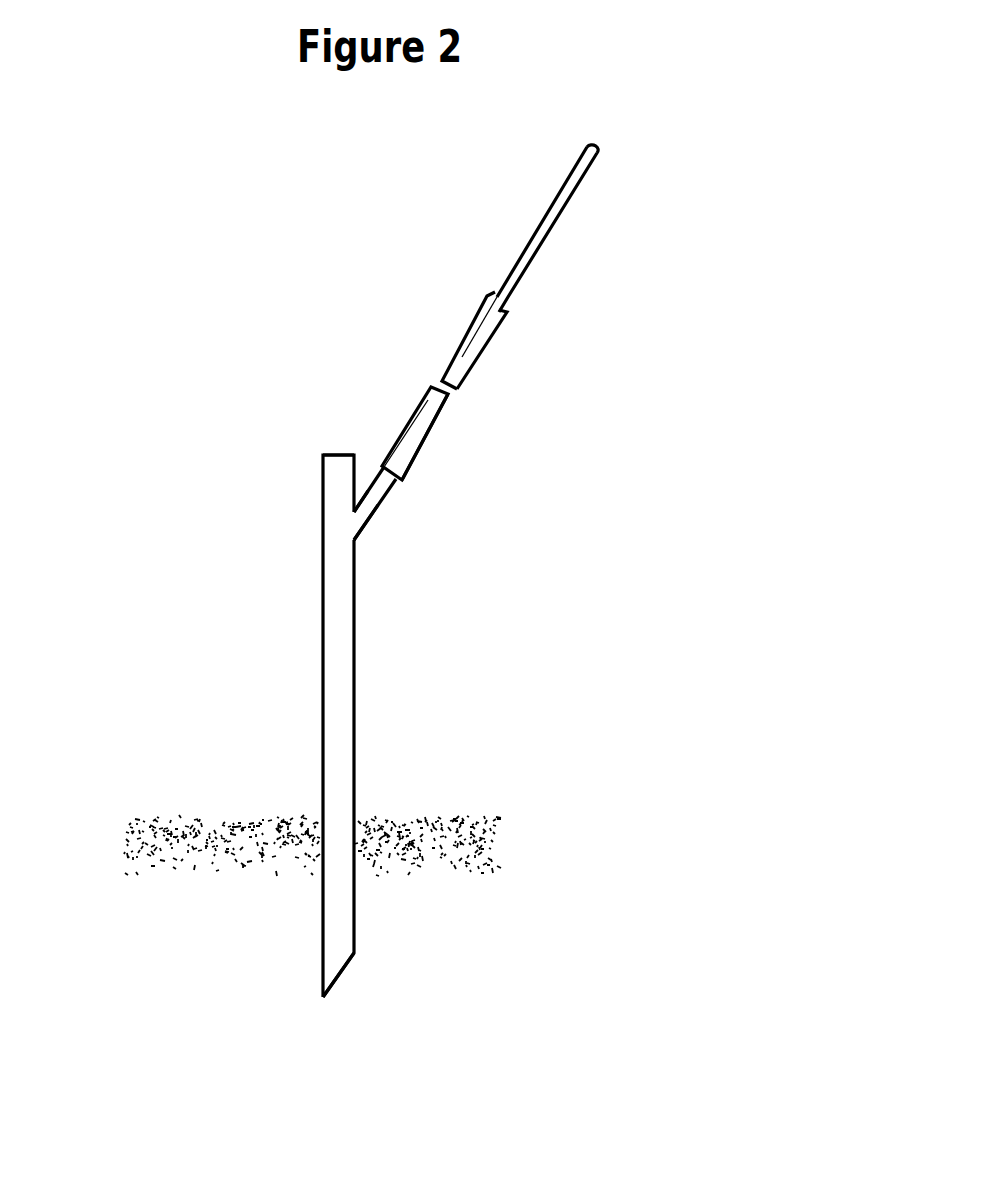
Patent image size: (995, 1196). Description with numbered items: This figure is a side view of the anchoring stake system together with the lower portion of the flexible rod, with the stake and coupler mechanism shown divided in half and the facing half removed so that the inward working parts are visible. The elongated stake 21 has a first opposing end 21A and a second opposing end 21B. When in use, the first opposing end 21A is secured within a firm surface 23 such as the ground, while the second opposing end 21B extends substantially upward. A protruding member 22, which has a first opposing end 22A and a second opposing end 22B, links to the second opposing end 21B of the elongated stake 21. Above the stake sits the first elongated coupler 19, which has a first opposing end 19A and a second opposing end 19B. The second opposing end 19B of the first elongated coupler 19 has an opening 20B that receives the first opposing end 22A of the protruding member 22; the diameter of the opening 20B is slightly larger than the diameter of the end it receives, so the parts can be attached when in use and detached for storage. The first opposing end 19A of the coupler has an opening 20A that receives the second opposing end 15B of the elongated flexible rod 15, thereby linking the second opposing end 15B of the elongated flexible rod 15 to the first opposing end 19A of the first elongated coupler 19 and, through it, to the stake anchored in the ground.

The elongated flexible rod 15 is at (584, 267).
The second opposing end of the elongated flexible rod 15B is at (458, 363).
The first elongated coupler 19 is at (444, 355).
The first opposing end of the first elongated coupler 19A is at (423, 301).
The second opposing end of the first elongated coupler 19B is at (444, 436).
The opening 20A is at (464, 336).
The opening 20B is at (420, 446).
The elongated stake 21 is at (355, 694).
The first opposing end of the elongated stake 21A is at (342, 948).
The second opposing end of the elongated stake 21B is at (337, 468).
The protruding member 22 is at (480, 501).
The first opposing end of the protruding member 22A is at (443, 402).
The second opposing end of the protruding member 22B is at (355, 518).
The firm surface 23 is at (466, 826).